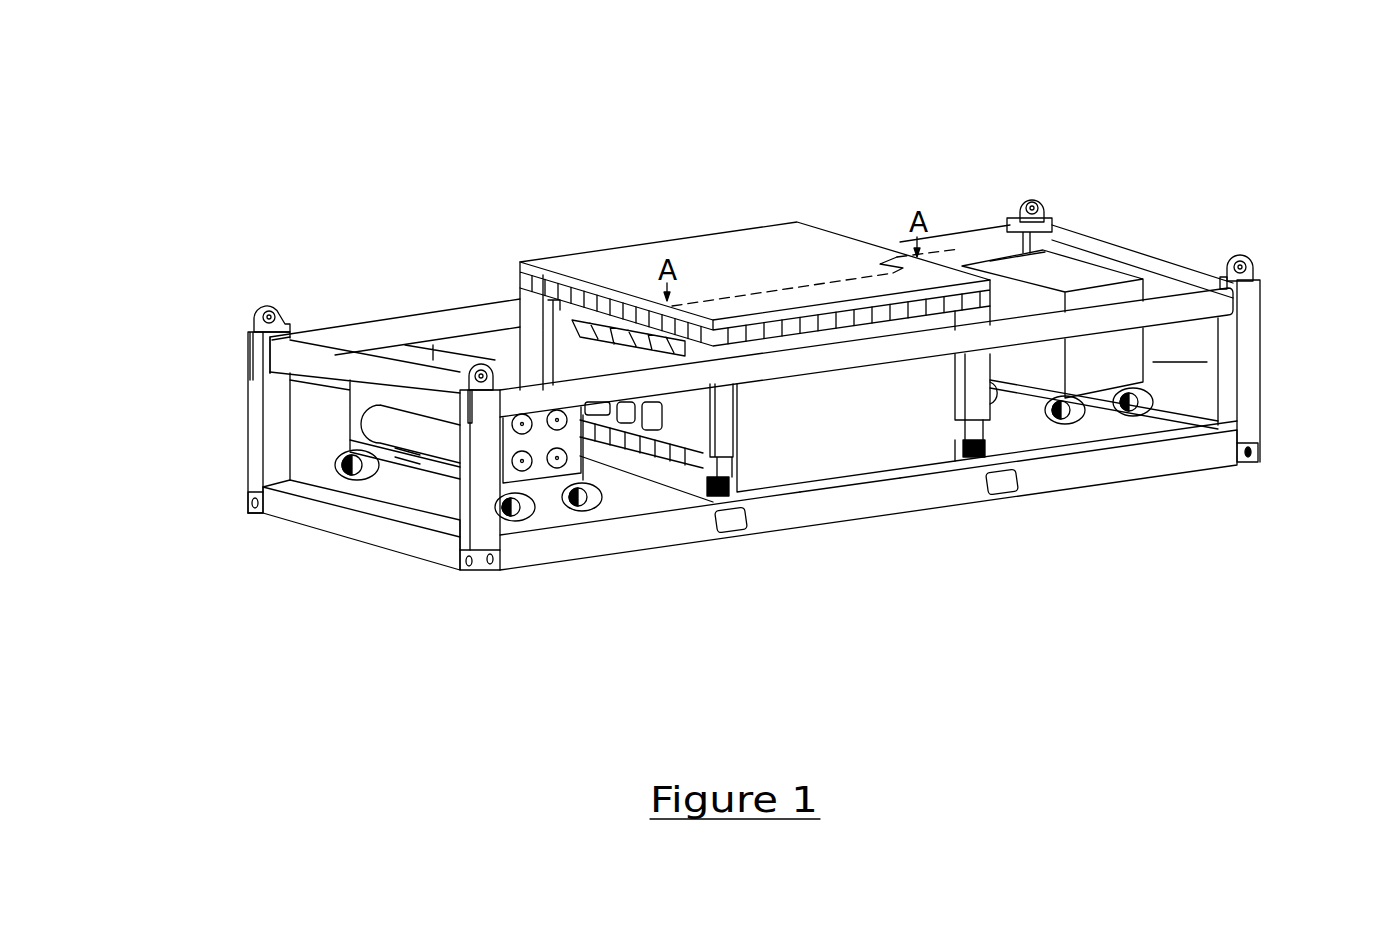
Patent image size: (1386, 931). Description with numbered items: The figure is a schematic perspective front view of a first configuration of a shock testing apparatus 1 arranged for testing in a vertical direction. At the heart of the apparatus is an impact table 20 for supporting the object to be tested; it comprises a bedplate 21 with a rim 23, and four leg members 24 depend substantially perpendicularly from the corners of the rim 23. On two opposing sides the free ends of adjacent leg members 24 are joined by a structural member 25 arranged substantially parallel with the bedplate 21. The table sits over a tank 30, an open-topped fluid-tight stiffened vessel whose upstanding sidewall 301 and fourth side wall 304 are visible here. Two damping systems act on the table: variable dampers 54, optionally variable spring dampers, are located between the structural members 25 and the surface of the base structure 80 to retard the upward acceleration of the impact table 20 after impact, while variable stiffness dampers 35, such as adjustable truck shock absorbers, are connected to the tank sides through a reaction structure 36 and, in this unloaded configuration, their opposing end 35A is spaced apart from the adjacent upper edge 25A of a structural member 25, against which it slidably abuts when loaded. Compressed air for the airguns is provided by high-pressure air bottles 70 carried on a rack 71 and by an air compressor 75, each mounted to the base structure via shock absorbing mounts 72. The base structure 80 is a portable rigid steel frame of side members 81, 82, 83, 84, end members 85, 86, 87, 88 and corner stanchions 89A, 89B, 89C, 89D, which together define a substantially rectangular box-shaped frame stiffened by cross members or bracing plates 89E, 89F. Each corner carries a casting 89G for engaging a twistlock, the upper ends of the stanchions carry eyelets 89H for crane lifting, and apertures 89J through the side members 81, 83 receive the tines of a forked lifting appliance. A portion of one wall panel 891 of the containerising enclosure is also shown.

The shock testing apparatus 1 is at (437, 135).
The impact table 20 is at (817, 215).
The bedplate 21 is at (845, 250).
The rim 23 is at (572, 282).
The leg member 24 is at (535, 305).
The structural member 25 is at (630, 440).
The upper edge 25A is at (655, 445).
The tank 30 is at (856, 455).
The sidewall 301 is at (687, 433).
The fourth side wall 304 is at (848, 470).
The variable stiffness damper 35 is at (633, 357).
The opposing end 35A is at (583, 517).
The reaction structure 36 is at (652, 330).
The variable damper 54 is at (717, 497).
The high-pressure air bottle 70 is at (413, 362).
The rack 71 is at (520, 577).
The shock absorbing mount 72 is at (333, 465).
The air compressor 75 is at (1108, 235).
The base structure 80 is at (302, 605).
The side member 81 is at (785, 523).
The side member 82 is at (1168, 308).
The side member 83 is at (313, 467).
The side member 84 is at (347, 322).
The end member 85 is at (473, 533).
The end member 86 is at (293, 353).
The end member 87 is at (1200, 417).
The end member 88 is at (1067, 270).
The corner stanchion 89A is at (248, 452).
The corner stanchion 89B is at (420, 537).
The corner stanchion 89C is at (1253, 380).
The corner stanchion 89D is at (1052, 220).
The cross member or bracing plate 89E is at (1137, 437).
The cross member or bracing plate 89F is at (538, 487).
The casting 89G is at (245, 500).
The eyelet 89H is at (260, 310).
The aperture 89J is at (732, 527).
The wall panel 891 is at (1185, 371).